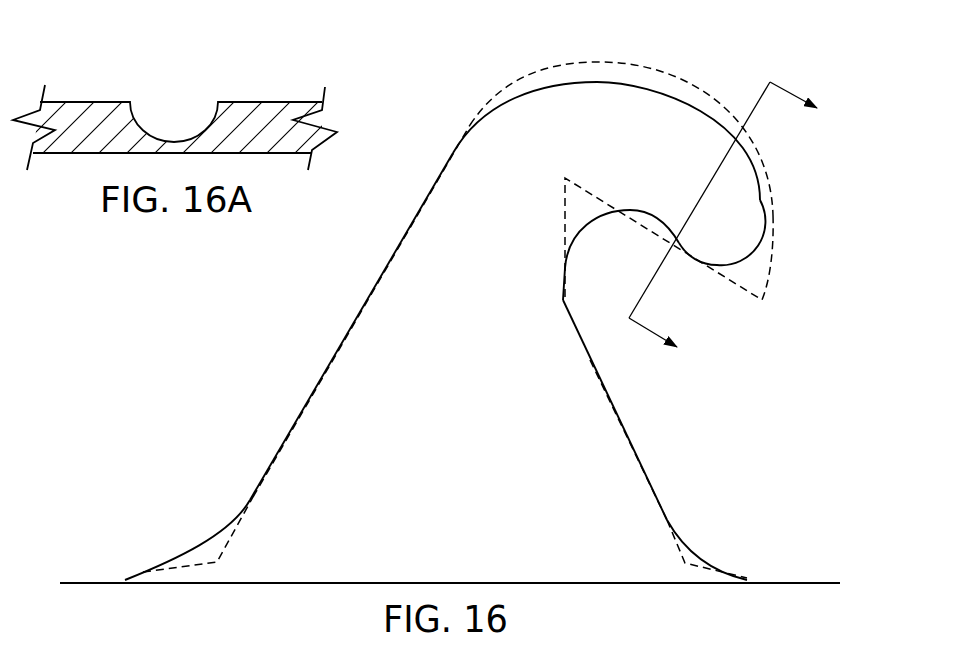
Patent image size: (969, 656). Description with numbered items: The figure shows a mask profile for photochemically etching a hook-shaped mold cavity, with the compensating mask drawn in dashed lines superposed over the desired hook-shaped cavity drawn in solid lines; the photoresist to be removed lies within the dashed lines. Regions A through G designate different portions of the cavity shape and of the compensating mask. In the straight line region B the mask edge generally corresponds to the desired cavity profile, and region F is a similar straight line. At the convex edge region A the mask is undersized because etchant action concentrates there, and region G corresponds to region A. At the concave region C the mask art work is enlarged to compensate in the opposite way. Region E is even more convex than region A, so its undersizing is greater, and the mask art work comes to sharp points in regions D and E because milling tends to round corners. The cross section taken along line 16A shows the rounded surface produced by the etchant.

The convex edge region A is at (200, 542).
The straight line region B is at (318, 378).
The concave edge region C is at (607, 62).
The pointed region D is at (768, 287).
The highly convex region E is at (597, 223).
The straight line region F is at (640, 447).
The convex edge region G is at (698, 557).
The section line 16A is at (746, 225).